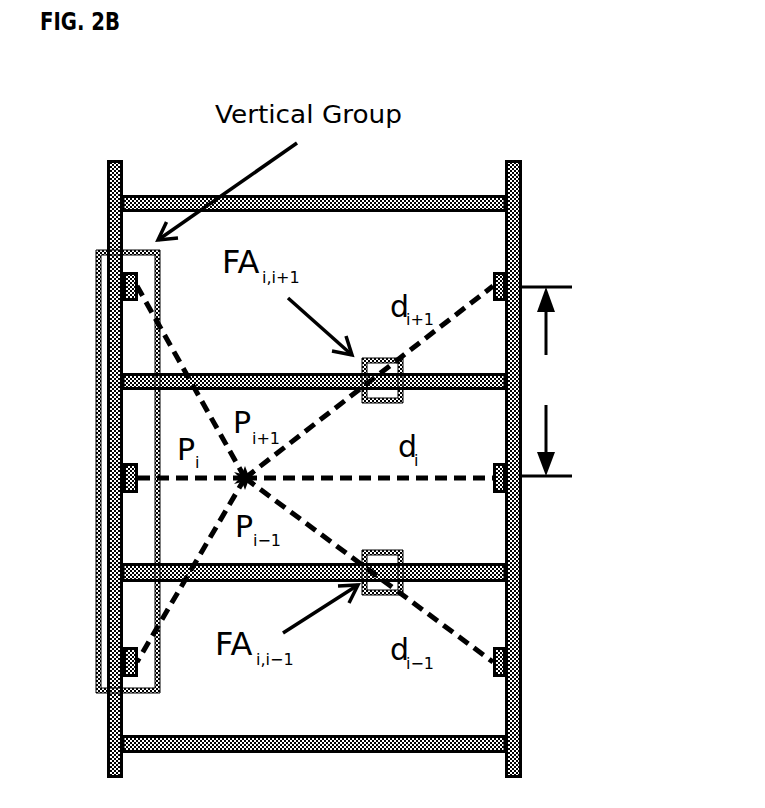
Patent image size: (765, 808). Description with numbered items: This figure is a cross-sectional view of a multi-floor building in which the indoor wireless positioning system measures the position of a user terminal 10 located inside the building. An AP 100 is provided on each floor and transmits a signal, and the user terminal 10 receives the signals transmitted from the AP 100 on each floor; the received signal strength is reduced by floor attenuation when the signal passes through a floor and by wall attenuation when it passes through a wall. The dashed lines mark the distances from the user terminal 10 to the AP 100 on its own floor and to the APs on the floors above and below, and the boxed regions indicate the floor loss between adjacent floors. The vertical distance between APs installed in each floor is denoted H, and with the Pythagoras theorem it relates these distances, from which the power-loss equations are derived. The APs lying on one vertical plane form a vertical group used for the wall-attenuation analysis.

The AP 100 is at (510, 273).
The user terminal 10 is at (248, 480).
The vertical distance between APs installed in each floor H is at (547, 381).